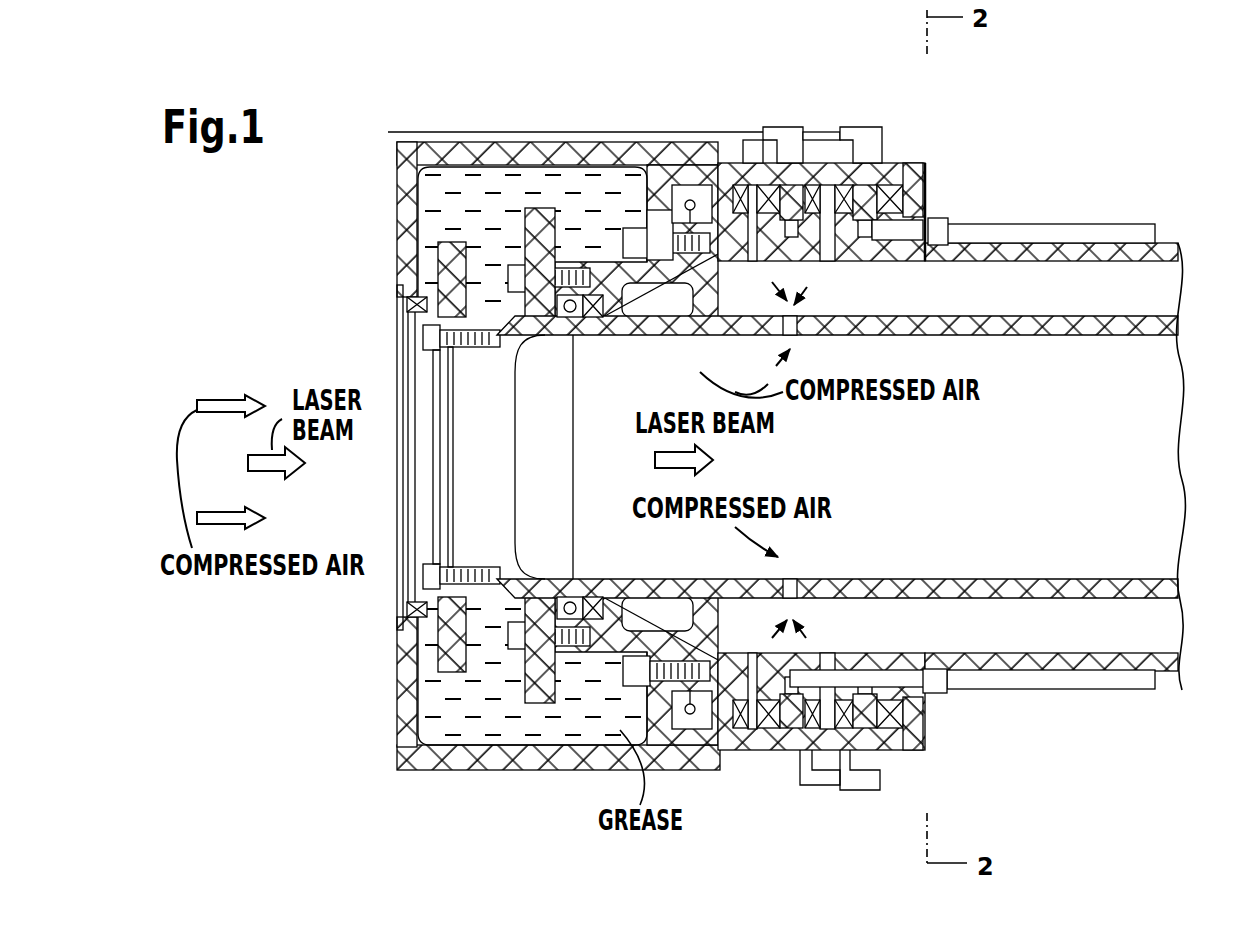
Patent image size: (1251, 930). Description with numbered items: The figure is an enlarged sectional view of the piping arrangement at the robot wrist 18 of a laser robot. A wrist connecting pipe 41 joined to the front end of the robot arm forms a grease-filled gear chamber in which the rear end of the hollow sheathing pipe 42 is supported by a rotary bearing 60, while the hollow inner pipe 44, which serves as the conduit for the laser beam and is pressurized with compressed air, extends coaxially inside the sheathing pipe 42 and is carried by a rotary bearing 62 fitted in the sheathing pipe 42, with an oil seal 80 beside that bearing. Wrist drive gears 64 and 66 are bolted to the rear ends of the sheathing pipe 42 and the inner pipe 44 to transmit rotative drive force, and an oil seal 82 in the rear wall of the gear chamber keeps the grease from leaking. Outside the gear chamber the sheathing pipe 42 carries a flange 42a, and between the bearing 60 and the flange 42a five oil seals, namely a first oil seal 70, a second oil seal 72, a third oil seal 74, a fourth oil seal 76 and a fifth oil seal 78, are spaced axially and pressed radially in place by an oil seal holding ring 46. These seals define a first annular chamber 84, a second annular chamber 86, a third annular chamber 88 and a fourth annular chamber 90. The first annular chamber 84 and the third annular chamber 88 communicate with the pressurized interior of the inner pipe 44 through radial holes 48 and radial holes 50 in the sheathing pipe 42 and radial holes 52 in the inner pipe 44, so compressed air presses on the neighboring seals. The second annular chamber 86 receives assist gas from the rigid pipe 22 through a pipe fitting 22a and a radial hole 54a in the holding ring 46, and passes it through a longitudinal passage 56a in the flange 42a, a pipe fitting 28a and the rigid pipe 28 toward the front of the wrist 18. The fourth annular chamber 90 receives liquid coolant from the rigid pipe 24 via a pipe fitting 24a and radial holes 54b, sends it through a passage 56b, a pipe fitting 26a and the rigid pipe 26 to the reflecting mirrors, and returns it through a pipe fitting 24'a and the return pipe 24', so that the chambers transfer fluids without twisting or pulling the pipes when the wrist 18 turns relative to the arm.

The robot wrist 18 is at (1073, 747).
The rigid pipe 22 is at (540, 133).
The pipe fitting 22a is at (782, 133).
The rigid pipe 24 is at (835, 108).
The pipe fitting 24a is at (866, 133).
The rigid pipe 24' is at (795, 794).
The pipe fitting 24'a is at (871, 796).
The rigid pipe 26 is at (1077, 228).
The pipe fitting 26a is at (948, 225).
The rigid pipe 28 is at (1140, 690).
The pipe fitting 28a is at (950, 690).
The wrist connecting pipe 41 is at (552, 760).
The sheathing pipe 42 is at (1112, 250).
The flange 42a is at (932, 170).
The inner pipe 44 is at (1180, 306).
The oil seal holding ring 46 is at (918, 742).
The radial holes 48 is at (753, 262).
The radial holes 50 is at (830, 260).
The radial holes 52 is at (795, 334).
The radial hole 54a is at (818, 167).
The radial holes 54b is at (900, 162).
The longitudinal passage 56a is at (903, 678).
The longitudinal passage 56b is at (940, 220).
The rotary bearing 60 is at (678, 187).
The rotary bearing 62 is at (562, 312).
The wrist drive gear 64 is at (528, 700).
The wrist drive gear 66 is at (441, 654).
The first oil seal 70 is at (740, 197).
The second oil seal 72 is at (767, 197).
The third oil seal 74 is at (814, 694).
The fourth oil seal 76 is at (842, 700).
The fifth oil seal 78 is at (903, 165).
The oil seal 80 is at (600, 318).
The oil seal 82 is at (405, 305).
The first annular chamber 84 is at (745, 724).
The second annular chamber 86 is at (807, 737).
The third annular chamber 88 is at (858, 740).
The fourth annular chamber 90 is at (882, 743).